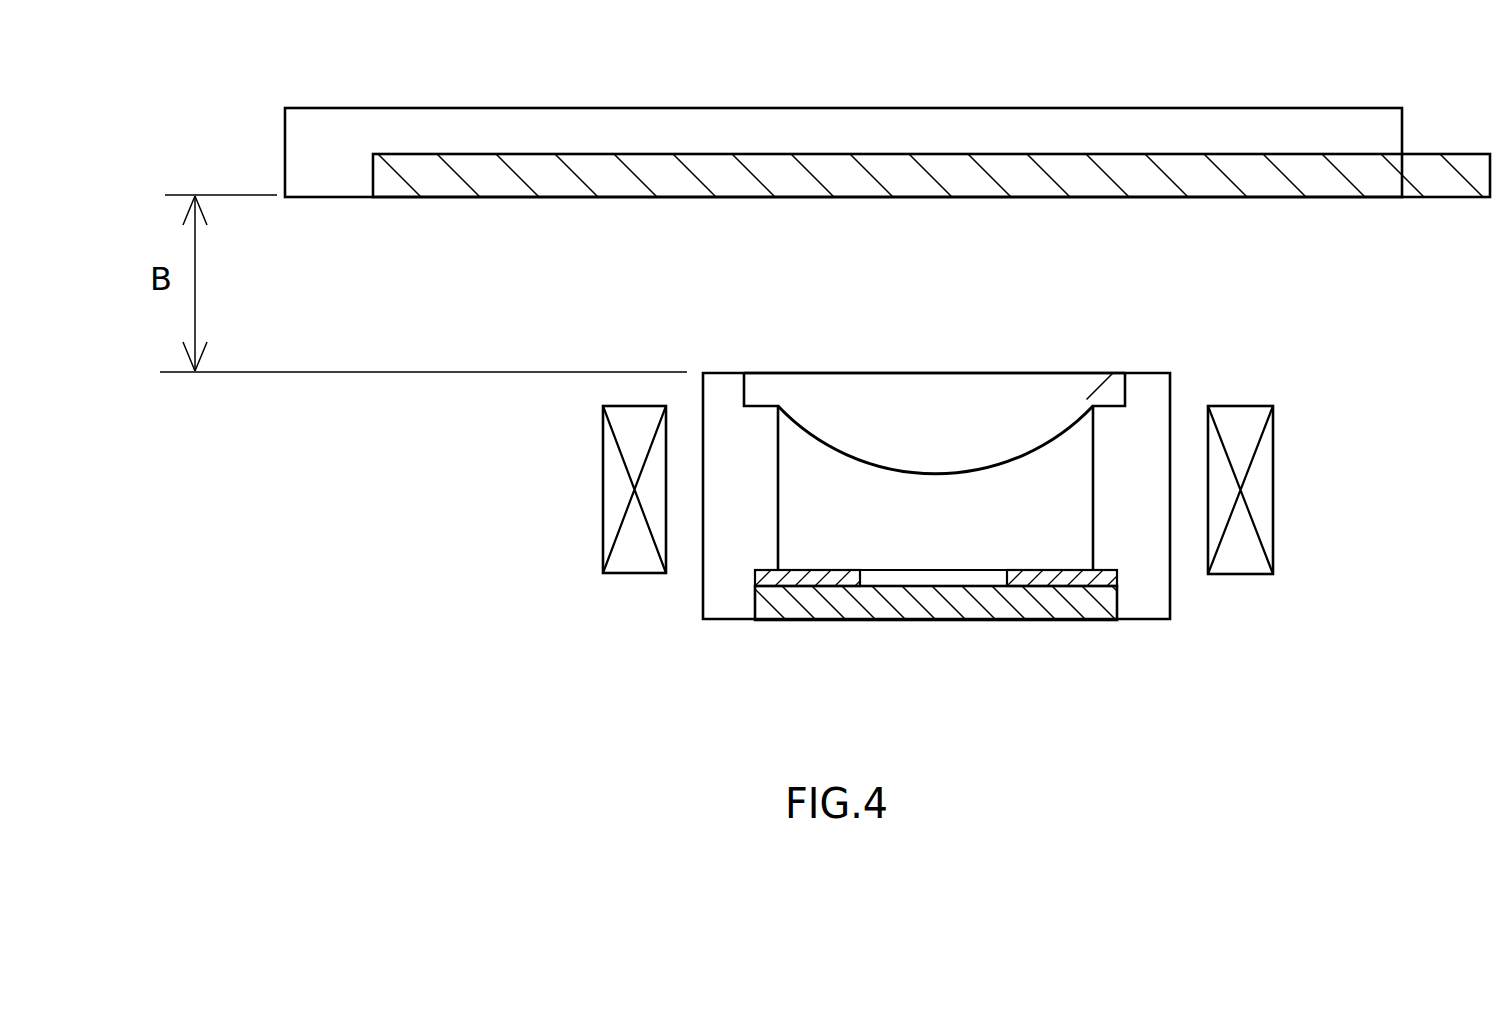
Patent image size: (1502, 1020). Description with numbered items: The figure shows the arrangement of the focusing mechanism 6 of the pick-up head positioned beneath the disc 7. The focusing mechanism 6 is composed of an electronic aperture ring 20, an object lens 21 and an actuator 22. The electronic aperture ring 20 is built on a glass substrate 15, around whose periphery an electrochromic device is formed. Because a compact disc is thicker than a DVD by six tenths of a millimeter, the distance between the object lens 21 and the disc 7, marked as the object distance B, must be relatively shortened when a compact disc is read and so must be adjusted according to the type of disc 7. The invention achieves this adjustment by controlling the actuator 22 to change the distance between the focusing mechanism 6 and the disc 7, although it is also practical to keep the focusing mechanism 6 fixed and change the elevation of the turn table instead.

The disc 7 is at (1358, 102).
The focusing mechanism 6 is at (1012, 486).
The object lens 21 is at (1017, 393).
The actuator 22 is at (638, 548).
The glass substrate 15 is at (898, 602).
The electronic aperture ring 20 is at (1038, 585).